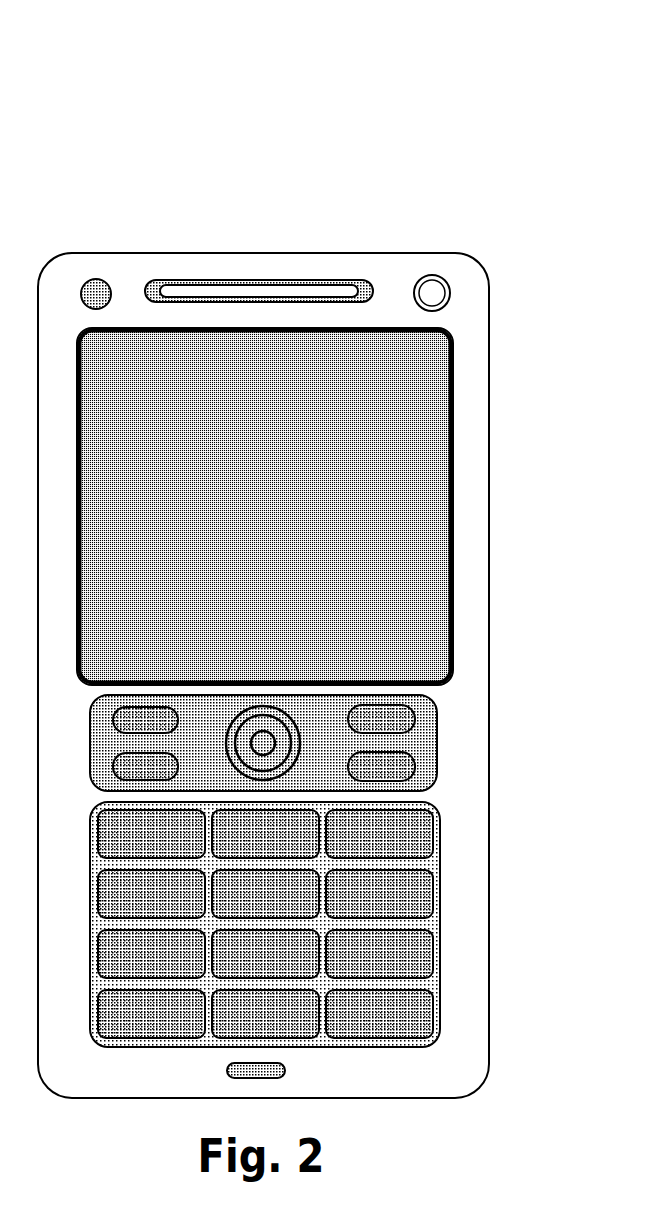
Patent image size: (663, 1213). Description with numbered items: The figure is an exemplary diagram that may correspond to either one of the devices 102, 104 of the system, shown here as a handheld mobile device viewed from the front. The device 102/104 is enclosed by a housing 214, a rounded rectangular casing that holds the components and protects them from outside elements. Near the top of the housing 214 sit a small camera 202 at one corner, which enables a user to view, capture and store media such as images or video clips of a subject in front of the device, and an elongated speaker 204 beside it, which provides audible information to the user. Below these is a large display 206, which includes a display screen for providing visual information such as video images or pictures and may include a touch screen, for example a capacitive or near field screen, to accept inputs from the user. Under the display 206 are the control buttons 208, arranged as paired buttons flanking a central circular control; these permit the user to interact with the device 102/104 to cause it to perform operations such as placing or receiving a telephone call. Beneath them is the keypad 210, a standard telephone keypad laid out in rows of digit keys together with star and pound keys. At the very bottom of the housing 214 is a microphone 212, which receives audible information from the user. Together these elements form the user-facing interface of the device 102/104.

The device 102 is at (312, 553).
The device 104 is at (312, 553).
The camera 202 is at (96, 279).
The speaker 204 is at (242, 280).
The display 206 is at (392, 328).
The control buttons 208 is at (437, 743).
The keypad 210 is at (440, 924).
The microphone 212 is at (285, 1071).
The housing 214 is at (489, 515).